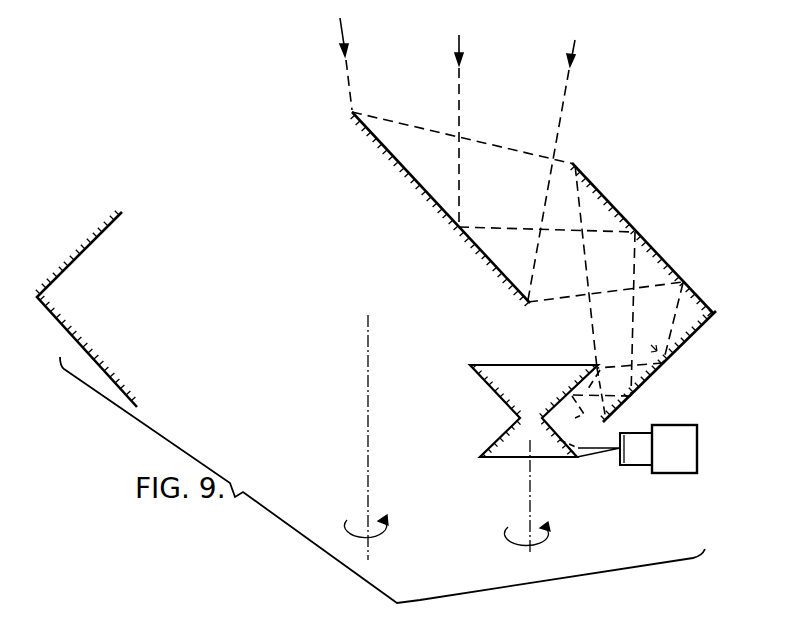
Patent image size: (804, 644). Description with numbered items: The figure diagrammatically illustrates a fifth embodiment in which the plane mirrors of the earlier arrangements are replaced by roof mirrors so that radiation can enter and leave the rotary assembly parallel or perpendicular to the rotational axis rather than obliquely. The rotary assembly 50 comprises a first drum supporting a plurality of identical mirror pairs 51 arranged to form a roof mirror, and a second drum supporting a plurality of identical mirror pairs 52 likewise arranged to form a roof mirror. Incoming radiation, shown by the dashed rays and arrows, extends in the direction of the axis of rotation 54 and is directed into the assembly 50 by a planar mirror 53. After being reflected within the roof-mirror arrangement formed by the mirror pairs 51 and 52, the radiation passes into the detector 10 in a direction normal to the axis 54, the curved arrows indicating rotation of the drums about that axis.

The detector 10 is at (694, 449).
The rotary assembly 50 is at (686, 278).
The mirror pairs 51 is at (716, 313).
The mirror pairs 52 is at (503, 452).
The planar mirror 53 is at (390, 154).
The axis of rotation 54 is at (370, 550).